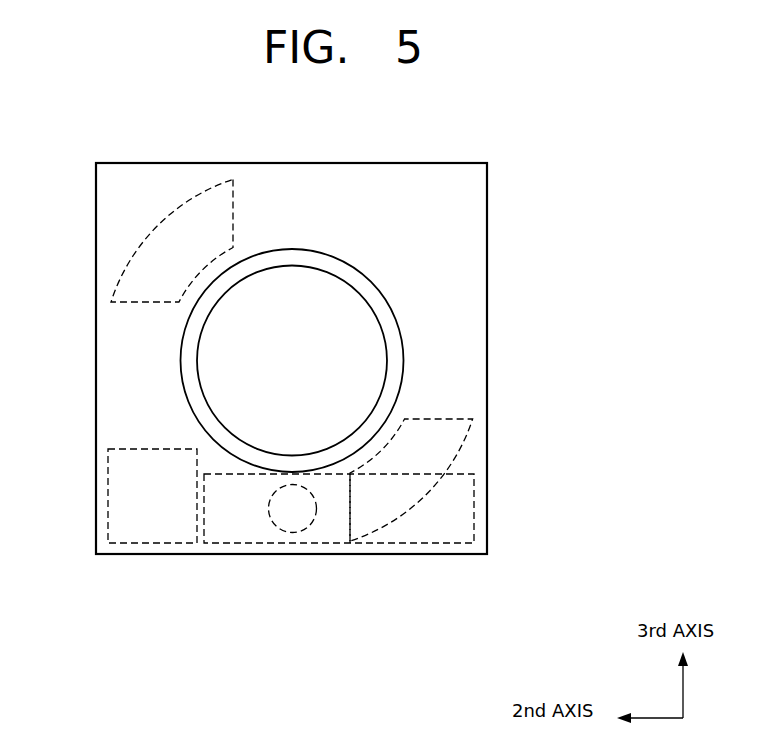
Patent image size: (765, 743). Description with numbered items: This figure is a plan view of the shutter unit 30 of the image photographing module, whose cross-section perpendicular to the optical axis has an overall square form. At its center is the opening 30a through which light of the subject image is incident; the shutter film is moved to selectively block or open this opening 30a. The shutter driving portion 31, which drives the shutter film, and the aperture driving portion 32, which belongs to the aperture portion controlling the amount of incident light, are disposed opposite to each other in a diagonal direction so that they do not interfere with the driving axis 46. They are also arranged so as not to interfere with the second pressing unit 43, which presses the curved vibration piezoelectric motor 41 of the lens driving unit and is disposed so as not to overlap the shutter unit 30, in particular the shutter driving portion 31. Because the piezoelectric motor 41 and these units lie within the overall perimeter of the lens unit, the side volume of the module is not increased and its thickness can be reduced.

The shutter unit 30 is at (506, 522).
The opening 30a is at (263, 272).
The shutter driving portion 31 is at (450, 443).
The aperture driving portion 32 is at (145, 259).
The curved vibration piezoelectric motor 41 is at (250, 527).
The second pressing unit 43 is at (293, 528).
The driving axis 46 is at (145, 507).